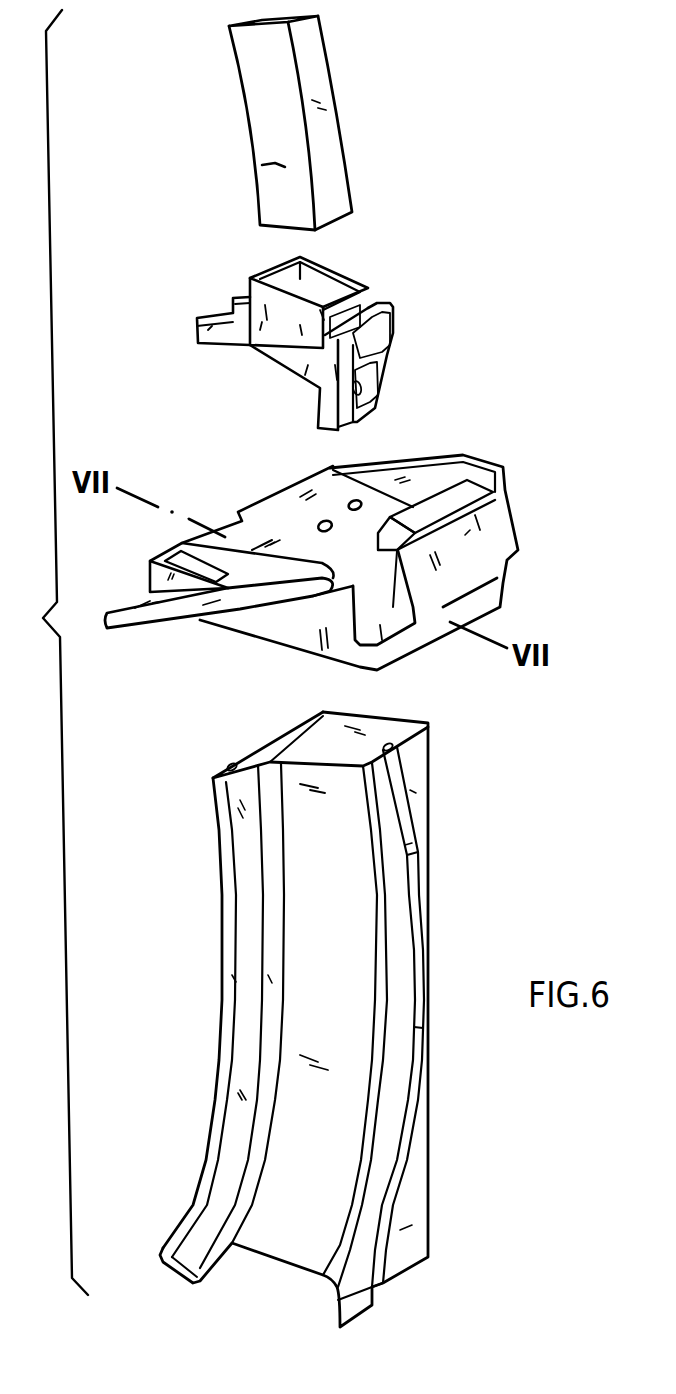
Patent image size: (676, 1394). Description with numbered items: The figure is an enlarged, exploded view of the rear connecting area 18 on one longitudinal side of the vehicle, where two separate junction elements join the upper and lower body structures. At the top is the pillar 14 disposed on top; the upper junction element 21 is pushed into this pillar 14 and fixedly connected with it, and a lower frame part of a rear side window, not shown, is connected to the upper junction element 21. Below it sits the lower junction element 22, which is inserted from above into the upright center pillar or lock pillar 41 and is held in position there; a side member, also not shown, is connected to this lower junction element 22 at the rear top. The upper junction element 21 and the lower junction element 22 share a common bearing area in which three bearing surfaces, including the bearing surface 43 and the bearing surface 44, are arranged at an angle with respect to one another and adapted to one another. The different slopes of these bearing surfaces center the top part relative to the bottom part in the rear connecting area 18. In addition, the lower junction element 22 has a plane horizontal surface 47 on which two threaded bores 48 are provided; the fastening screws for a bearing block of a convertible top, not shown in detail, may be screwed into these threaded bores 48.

The pillar 14 is at (328, 90).
The upper junction element 21 is at (400, 305).
The rear connecting area 18 is at (427, 397).
The lower junction element 22 is at (493, 453).
The center pillar or lock pillar 41 is at (248, 957).
The bearing surface 43 is at (203, 545).
The bearing surface 44 is at (262, 550).
The plane horizontal surface 47 is at (318, 495).
The threaded bores 48 is at (327, 521).